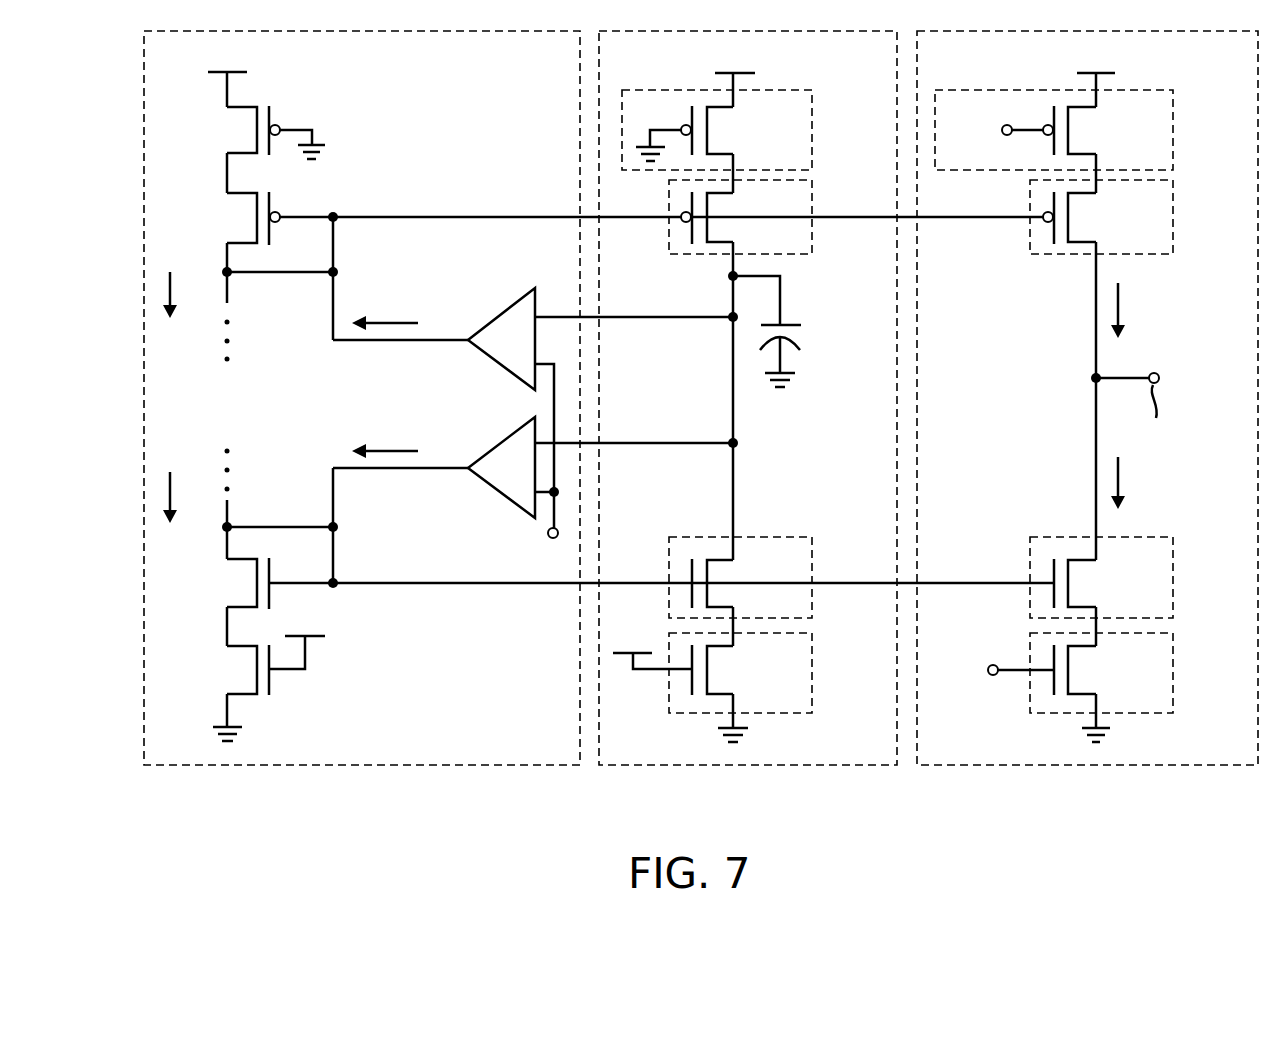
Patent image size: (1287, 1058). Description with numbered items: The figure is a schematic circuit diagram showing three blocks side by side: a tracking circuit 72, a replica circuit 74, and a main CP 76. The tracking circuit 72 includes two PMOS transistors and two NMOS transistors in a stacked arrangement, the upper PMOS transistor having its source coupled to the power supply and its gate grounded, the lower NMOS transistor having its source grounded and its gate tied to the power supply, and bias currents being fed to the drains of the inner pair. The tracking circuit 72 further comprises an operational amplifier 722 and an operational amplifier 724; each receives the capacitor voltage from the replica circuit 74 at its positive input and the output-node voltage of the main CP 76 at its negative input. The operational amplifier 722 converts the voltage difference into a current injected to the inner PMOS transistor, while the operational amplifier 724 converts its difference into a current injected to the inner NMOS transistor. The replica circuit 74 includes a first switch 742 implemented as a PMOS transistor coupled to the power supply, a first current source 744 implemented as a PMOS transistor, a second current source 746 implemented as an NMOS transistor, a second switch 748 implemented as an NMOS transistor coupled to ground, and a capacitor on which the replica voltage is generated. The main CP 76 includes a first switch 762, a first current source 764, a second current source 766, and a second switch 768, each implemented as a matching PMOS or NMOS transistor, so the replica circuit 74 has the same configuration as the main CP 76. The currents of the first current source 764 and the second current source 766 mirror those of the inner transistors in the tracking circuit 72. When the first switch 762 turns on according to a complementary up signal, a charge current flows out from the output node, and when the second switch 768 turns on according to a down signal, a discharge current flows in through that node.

The tracking circuit 72 is at (362, 765).
The replica circuit 74 is at (790, 765).
The main CP 76 is at (1092, 765).
The operational amplifier 722 is at (501, 316).
The operational amplifier 724 is at (501, 444).
The first switch 742 is at (813, 129).
The first current source 744 is at (813, 239).
The second current source 746 is at (813, 561).
The second switch 748 is at (813, 673).
The first switch 762 is at (1174, 129).
The first current source 764 is at (1174, 218).
The second current source 766 is at (1174, 579).
The second switch 768 is at (1174, 703).